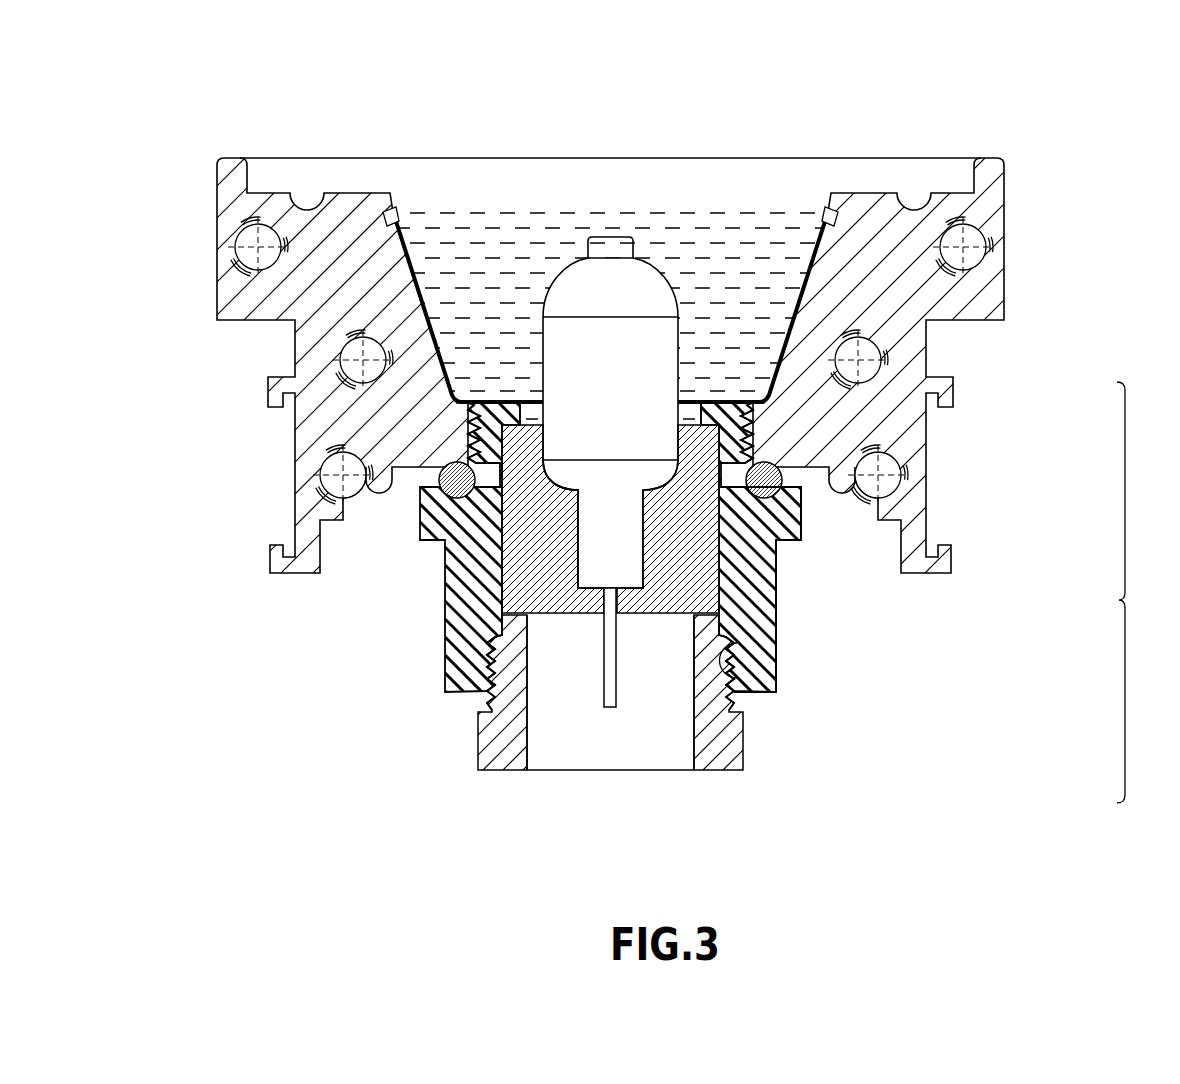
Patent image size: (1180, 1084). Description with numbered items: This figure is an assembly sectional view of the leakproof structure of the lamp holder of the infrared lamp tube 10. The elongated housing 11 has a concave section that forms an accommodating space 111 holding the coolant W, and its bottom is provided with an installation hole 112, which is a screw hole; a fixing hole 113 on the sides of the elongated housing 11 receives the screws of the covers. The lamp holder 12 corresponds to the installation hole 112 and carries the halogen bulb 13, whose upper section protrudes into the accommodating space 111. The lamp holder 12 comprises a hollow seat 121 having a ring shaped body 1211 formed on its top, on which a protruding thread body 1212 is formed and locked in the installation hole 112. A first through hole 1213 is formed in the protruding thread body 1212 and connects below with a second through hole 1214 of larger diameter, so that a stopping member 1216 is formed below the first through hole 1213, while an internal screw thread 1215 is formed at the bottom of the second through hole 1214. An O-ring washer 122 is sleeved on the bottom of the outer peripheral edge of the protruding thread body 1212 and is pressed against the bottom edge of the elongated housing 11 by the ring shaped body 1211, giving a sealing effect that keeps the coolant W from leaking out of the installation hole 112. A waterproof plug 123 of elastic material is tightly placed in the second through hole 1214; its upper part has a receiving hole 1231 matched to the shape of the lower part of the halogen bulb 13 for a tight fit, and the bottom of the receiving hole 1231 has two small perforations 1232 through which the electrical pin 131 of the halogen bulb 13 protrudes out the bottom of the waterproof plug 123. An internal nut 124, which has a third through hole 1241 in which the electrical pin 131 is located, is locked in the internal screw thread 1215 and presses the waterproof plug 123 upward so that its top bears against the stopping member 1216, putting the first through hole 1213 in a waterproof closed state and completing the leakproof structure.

The infrared lamp tube 10 is at (1118, 70).
The elongated housing 11 is at (1006, 206).
The accommodating space 111 is at (690, 413).
The installation hole 112 is at (490, 400).
The fixing hole 113 is at (872, 373).
The coolant W is at (523, 258).
The lamp holder 12 is at (1143, 592).
The hollow seat 121 is at (776, 612).
The ring shaped body 1211 is at (801, 513).
The protruding thread body 1212 is at (778, 478).
The first through hole 1213 is at (752, 427).
The second through hole 1214 is at (736, 553).
The internal screw thread 1215 is at (776, 647).
The stopping member 1216 is at (477, 450).
The O-ring washer 122 is at (443, 452).
The waterproof plug 123 is at (545, 570).
The receiving hole 1231 is at (572, 493).
The small perforations 1232 is at (493, 640).
The internal nut 124 is at (745, 742).
The third through hole 1241 is at (668, 727).
The halogen bulb 13 is at (647, 293).
The electrical pin 131 is at (603, 692).